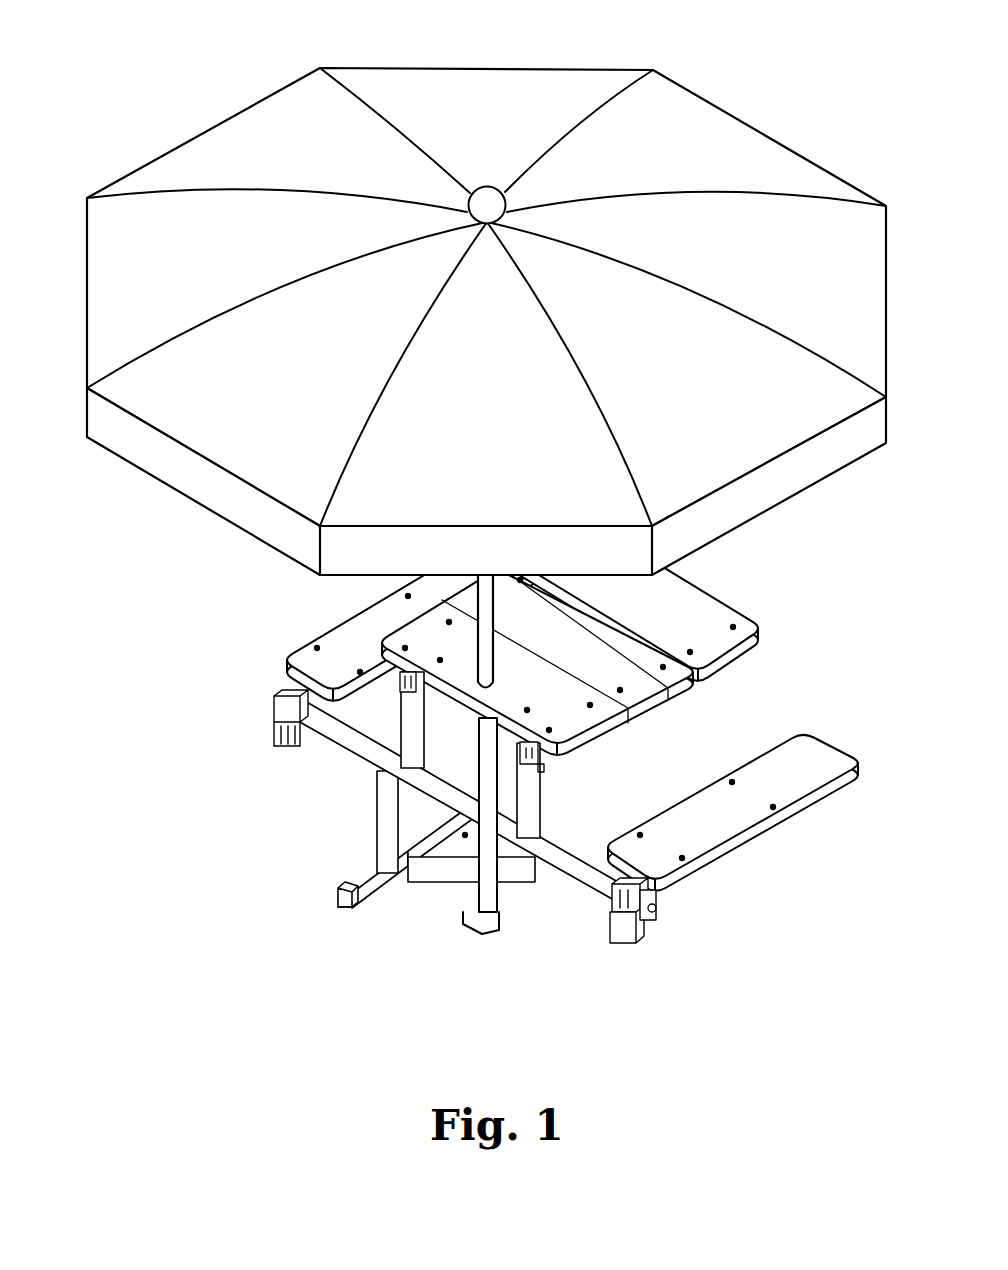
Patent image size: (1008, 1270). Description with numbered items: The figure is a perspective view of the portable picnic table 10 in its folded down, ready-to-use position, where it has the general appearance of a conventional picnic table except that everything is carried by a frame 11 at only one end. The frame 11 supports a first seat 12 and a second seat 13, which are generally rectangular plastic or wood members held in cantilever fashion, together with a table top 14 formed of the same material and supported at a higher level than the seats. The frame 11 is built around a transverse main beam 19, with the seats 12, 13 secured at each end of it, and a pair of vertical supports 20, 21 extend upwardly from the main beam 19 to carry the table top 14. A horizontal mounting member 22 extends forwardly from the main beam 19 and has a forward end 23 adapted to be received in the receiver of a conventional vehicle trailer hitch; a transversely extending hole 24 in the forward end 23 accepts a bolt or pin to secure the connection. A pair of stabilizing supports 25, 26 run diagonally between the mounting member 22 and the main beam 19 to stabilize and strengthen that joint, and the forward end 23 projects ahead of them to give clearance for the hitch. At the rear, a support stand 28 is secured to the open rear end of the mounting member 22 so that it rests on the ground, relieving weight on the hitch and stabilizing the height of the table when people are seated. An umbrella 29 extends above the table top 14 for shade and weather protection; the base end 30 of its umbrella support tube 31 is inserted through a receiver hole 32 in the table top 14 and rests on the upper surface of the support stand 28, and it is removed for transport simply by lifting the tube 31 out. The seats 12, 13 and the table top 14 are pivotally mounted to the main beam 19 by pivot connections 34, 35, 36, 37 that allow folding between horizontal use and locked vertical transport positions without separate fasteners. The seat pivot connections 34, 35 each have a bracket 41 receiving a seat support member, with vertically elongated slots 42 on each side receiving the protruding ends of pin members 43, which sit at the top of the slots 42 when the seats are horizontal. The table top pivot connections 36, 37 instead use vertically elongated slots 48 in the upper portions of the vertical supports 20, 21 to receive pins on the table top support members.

The portable picnic table 10 is at (175, 936).
The frame 11 is at (362, 752).
The first seat 12 is at (343, 632).
The second seat 13 is at (817, 745).
The table top 14 is at (705, 607).
The main beam 19 is at (440, 797).
The vertical support 20 is at (405, 718).
The vertical support 21 is at (538, 797).
The horizontal mounting member 22 is at (440, 848).
The forward end 23 is at (338, 893).
The transversely extending hole 24 is at (357, 908).
The stabilizing support 25 is at (383, 798).
The stabilizing support 26 is at (530, 882).
The support stand 28 is at (470, 918).
The umbrella 29 is at (227, 447).
The base end 30 is at (479, 740).
The umbrella support tube 31 is at (493, 613).
The receiver hole 32 is at (497, 680).
The pivot connection 34 is at (272, 713).
The pivot connection 35 is at (657, 908).
The pivot connection 36 is at (405, 680).
The pivot connection 37 is at (545, 765).
The bracket 41 is at (647, 923).
The vertically elongated slot 42 is at (640, 922).
The pin member 43 is at (645, 900).
The vertically elongated slot 48 is at (540, 772).